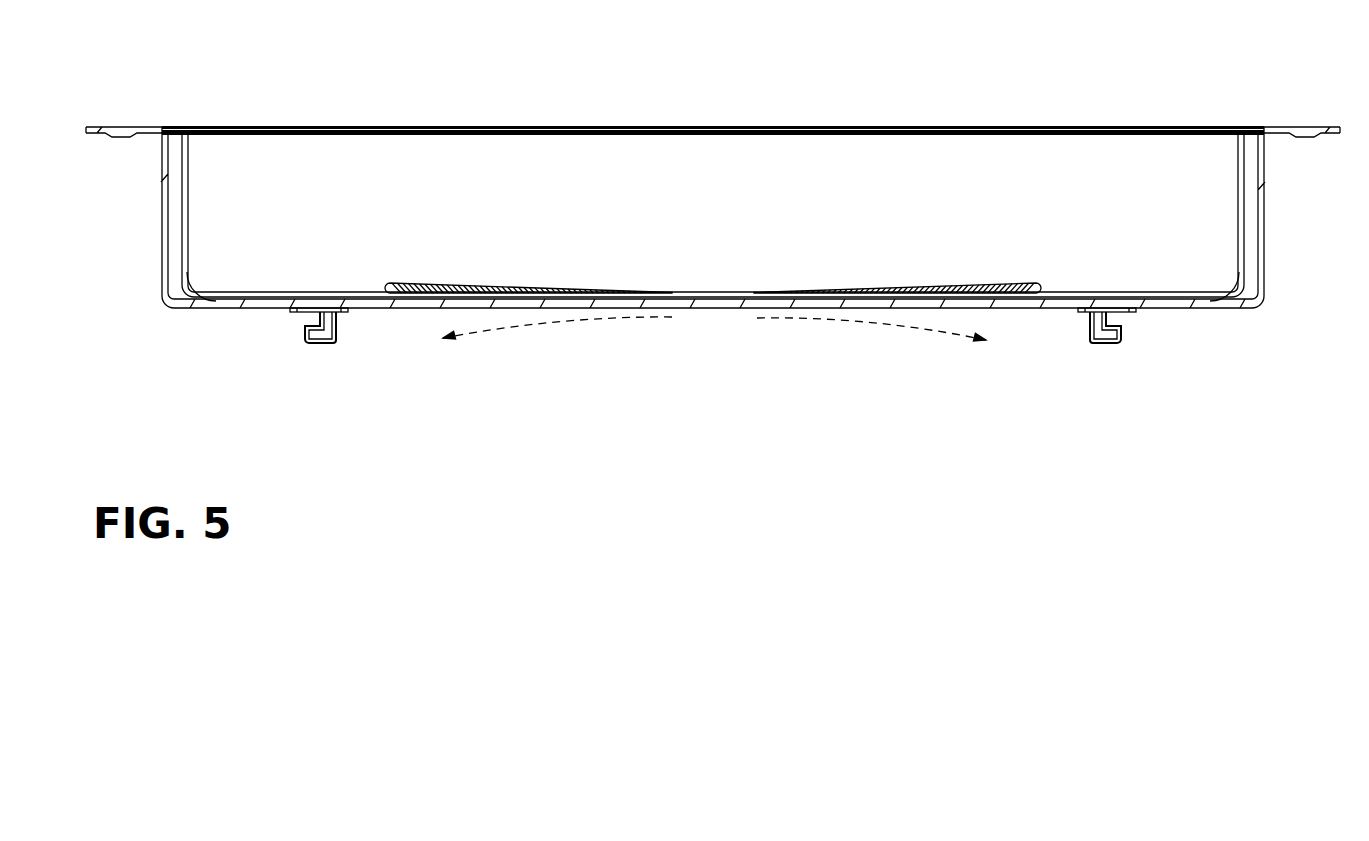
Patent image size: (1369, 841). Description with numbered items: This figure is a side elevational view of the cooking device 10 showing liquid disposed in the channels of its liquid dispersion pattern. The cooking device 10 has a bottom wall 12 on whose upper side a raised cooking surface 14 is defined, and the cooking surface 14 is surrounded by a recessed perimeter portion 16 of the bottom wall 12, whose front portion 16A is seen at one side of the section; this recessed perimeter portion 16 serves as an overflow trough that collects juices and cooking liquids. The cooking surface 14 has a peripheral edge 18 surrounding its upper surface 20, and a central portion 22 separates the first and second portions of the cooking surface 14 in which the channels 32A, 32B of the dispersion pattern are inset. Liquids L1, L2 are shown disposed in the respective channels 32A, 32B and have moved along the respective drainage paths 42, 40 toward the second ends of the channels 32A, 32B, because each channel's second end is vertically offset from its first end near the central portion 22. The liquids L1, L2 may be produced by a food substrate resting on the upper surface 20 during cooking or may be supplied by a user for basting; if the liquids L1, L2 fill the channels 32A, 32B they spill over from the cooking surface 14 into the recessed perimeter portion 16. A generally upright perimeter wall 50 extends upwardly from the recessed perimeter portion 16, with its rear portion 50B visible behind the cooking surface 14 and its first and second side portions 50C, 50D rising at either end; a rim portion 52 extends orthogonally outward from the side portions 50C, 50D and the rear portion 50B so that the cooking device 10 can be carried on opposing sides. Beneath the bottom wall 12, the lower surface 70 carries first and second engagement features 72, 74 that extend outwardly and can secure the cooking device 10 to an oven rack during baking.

The cooking device 10 is at (687, 183).
The bottom wall 12 is at (1083, 291).
The cooking surface 14 is at (1157, 284).
The recessed perimeter portion 16 is at (1210, 300).
The front portion 16A is at (183, 273).
The peripheral edge 18 is at (250, 300).
The upper surface 20 is at (250, 300).
The central portion 22 is at (725, 292).
The channel 32A is at (451, 281).
The channel 32B is at (961, 277).
The drainage path 40 is at (865, 322).
The drainage path 42 is at (598, 320).
The upright perimeter wall 50 is at (701, 185).
The rear portion 50B is at (902, 180).
The first side portion 50C is at (162, 226).
The second side portion 50D is at (1268, 172).
The rim portion 52 is at (112, 123).
The lower surface 70 is at (997, 305).
The first engagement feature 72 is at (296, 344).
The second engagement feature 74 is at (1127, 327).
The liquid L1 is at (392, 289).
The liquid L2 is at (1040, 283).